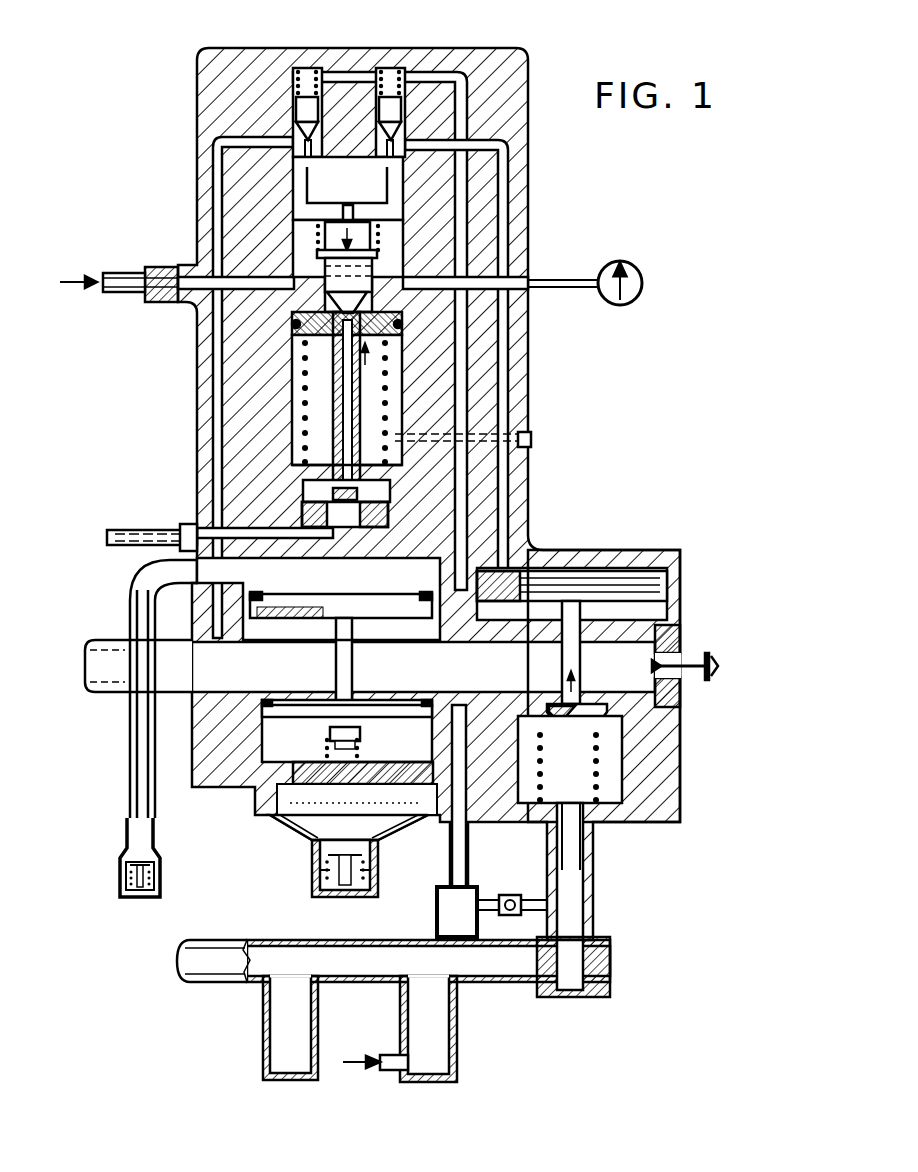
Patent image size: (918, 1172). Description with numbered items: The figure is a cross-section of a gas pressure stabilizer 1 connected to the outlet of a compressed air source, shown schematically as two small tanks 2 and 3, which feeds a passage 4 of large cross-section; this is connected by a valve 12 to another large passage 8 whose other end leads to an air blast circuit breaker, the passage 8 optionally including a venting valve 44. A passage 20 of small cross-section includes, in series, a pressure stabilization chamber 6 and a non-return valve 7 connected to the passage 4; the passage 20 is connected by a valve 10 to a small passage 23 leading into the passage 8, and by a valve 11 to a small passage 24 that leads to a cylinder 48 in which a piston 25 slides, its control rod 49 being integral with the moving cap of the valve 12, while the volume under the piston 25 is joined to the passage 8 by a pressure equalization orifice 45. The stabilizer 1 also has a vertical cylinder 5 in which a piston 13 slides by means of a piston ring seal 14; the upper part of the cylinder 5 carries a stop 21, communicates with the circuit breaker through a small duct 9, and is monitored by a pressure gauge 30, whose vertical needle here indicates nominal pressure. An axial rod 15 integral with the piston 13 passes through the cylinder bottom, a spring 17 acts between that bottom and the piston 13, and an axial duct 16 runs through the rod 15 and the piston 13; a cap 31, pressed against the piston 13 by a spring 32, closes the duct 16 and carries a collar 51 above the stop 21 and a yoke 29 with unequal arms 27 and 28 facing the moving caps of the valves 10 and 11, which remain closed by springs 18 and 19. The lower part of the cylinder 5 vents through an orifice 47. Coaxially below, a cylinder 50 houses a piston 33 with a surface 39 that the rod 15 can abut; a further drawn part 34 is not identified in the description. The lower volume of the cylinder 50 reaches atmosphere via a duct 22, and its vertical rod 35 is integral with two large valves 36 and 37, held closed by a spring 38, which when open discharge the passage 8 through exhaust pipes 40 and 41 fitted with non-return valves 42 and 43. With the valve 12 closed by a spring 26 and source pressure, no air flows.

The gas pressure stabilizer 1 is at (216, 88).
The small tank 2 is at (285, 1031).
The small tank 3 is at (435, 1028).
The passage 4 is at (575, 878).
The cylinder 5 is at (395, 405).
The pressure stabilization chamber 6 is at (453, 918).
The non-return valve 7 is at (508, 897).
The passage 8 is at (218, 658).
The duct 9 is at (193, 281).
The valve 10 is at (306, 70).
The valve 11 is at (388, 70).
The valve 12 is at (592, 735).
The piston 13 is at (300, 338).
The piston ring seal 14 is at (292, 326).
The axial rod 15 is at (332, 382).
The axial duct 16 is at (340, 402).
The spring 17 is at (328, 432).
The spring 18 is at (308, 104).
The spring 19 is at (391, 104).
The passage 20 is at (462, 325).
The stop 21 is at (308, 262).
The duct 22 is at (247, 533).
The passage 23 is at (216, 218).
The passage 24 is at (505, 367).
The piston 25 is at (560, 572).
The spring 26 is at (602, 782).
The arm 27 is at (305, 190).
The arm 28 is at (392, 190).
The yoke 29 is at (331, 204).
The pressure gauge 30 is at (637, 270).
The cap 31 is at (352, 284).
The spring 32 is at (392, 235).
The piston 33 is at (333, 474).
The seal block 34 is at (325, 503).
The vertical rod 35 is at (338, 668).
The valve 36 is at (405, 612).
The valve 37 is at (356, 622).
The spring 38 is at (328, 752).
The surface 39 is at (385, 604).
The exhaust pipe 40 is at (135, 748).
The exhaust pipe 41 is at (322, 824).
The non-return valve 42 is at (130, 895).
The non-return valve 43 is at (330, 898).
The venting valve 44 is at (672, 688).
The pressure equalization orifice 45 is at (520, 625).
The orifice 47 is at (534, 440).
The cylinder 48 is at (652, 568).
The control rod 49 is at (576, 660).
The cylinder 50 is at (380, 496).
The collar 51 is at (385, 262).